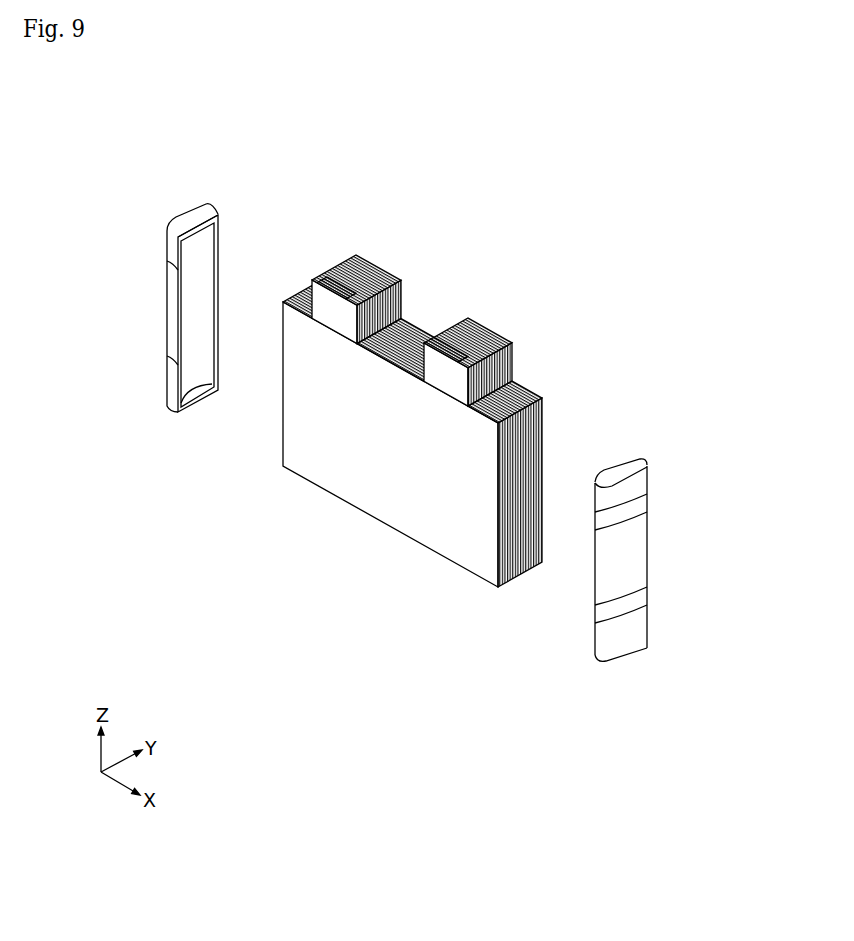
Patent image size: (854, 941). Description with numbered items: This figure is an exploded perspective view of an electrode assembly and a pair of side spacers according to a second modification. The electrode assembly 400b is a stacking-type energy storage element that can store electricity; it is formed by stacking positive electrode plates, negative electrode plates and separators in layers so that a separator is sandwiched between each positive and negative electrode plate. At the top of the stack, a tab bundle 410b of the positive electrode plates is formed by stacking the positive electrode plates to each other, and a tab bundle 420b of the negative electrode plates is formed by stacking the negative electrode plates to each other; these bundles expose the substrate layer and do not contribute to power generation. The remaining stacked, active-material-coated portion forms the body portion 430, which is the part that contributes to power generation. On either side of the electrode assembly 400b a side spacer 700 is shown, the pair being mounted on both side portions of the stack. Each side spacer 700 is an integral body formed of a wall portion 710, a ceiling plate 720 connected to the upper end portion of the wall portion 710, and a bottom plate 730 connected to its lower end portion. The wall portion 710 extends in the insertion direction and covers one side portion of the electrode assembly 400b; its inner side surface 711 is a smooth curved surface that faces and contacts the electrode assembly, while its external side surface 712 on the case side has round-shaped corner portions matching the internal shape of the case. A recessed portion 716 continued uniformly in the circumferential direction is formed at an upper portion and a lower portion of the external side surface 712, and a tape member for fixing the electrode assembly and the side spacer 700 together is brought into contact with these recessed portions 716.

The electrode assembly 400b is at (439, 421).
The tab bundle of the positive electrode plates 410b is at (334, 310).
The tab bundle of the negative electrode plates 420b is at (456, 374).
The body portion 430 is at (421, 537).
The side spacer 700 is at (414, 401).
The wall portion 710 is at (170, 312).
The inner side surface 711 is at (210, 250).
The external side surface 712 is at (641, 632).
The recessed portion 716 is at (165, 266).
The ceiling plate 720 is at (196, 212).
The bottom plate 730 is at (188, 414).